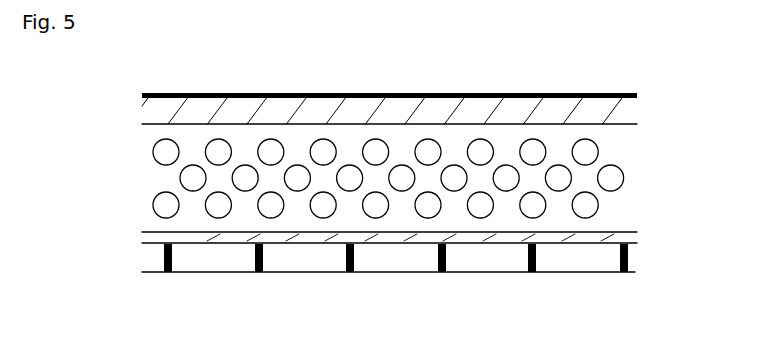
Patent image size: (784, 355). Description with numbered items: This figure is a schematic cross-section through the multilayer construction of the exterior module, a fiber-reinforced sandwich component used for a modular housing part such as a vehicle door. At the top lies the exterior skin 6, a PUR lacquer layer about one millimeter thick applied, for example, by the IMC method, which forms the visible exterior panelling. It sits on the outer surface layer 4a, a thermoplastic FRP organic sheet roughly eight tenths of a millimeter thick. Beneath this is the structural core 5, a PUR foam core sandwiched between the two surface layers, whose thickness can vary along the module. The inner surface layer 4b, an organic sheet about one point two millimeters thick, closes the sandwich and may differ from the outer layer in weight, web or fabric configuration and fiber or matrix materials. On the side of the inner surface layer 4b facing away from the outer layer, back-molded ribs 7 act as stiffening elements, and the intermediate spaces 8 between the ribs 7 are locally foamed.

The exterior skin 6 is at (637, 96).
The outer surface layer 4a is at (630, 113).
The structural core 5 is at (626, 157).
The inner surface layer 4b is at (637, 233).
The ribs 7 is at (345, 257).
The intermediate spaces 8 is at (408, 262).